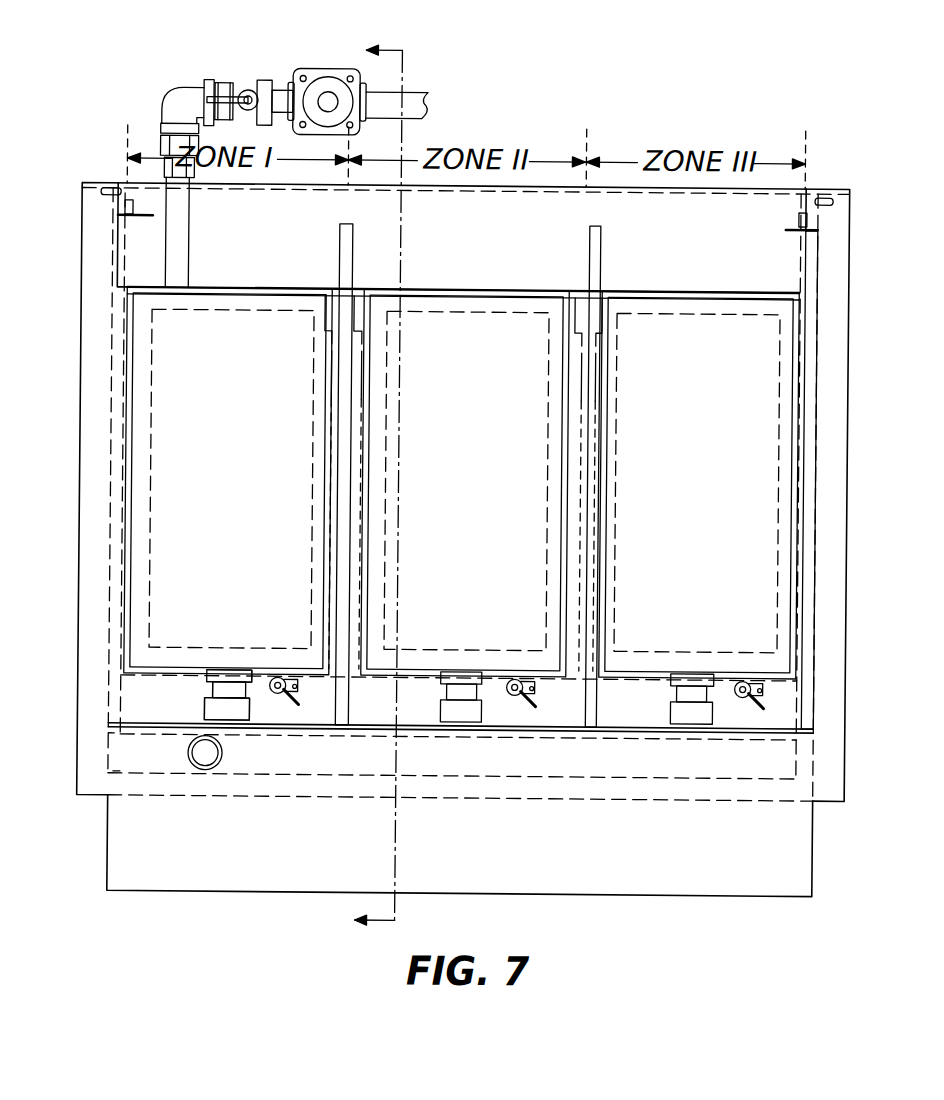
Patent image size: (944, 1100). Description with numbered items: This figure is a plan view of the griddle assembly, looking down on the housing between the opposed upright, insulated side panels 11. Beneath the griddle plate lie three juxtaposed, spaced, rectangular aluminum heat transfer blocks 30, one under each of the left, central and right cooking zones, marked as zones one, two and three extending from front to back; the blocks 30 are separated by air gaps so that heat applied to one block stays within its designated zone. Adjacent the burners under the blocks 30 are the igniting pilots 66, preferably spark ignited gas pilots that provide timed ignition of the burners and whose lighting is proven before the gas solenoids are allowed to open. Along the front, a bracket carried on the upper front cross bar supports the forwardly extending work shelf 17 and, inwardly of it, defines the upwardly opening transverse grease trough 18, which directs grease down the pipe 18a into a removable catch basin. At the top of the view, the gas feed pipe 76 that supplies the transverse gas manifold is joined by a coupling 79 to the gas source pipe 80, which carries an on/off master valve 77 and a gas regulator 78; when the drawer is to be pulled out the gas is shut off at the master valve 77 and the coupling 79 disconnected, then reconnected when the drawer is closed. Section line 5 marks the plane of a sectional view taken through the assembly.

The side panels 11 is at (79, 575).
The heat transfer blocks 30 is at (173, 603).
The pilots 66 is at (283, 696).
The work shelf 17 is at (228, 882).
The grease trough 18 is at (797, 757).
The pipe 18a is at (219, 768).
The feed pipe 76 is at (172, 240).
The master valve 77 is at (244, 92).
The gas regulator 78 is at (325, 70).
The coupling 79 is at (158, 150).
The gas source pipe 80 is at (408, 114).
The section line 5- 5 is at (370, 486).